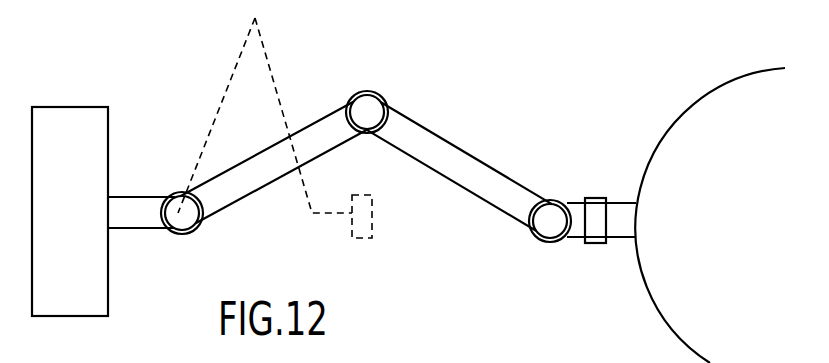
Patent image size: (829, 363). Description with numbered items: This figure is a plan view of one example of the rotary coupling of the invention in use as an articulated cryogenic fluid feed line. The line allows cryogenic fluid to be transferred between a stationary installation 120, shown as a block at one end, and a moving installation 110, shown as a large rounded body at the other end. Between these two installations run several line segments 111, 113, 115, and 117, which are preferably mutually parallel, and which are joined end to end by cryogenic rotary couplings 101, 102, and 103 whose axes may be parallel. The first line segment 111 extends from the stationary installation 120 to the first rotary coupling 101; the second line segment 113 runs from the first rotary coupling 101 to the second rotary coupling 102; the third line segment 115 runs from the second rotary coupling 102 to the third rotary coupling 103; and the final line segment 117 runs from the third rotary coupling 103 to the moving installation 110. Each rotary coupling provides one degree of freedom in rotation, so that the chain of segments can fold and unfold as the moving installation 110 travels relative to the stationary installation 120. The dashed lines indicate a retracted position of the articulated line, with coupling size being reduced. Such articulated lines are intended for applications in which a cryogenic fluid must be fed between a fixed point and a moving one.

The stationary installation 120 is at (70, 123).
The line segment 111 is at (128, 217).
The cryogenic rotary coupling 101 is at (180, 237).
The line segment 113 is at (268, 165).
The cryogenic rotary coupling 102 is at (368, 92).
The line segment 115 is at (473, 175).
The cryogenic rotary coupling 103 is at (545, 198).
The line segment 117 is at (573, 225).
The moving installation 110 is at (708, 97).